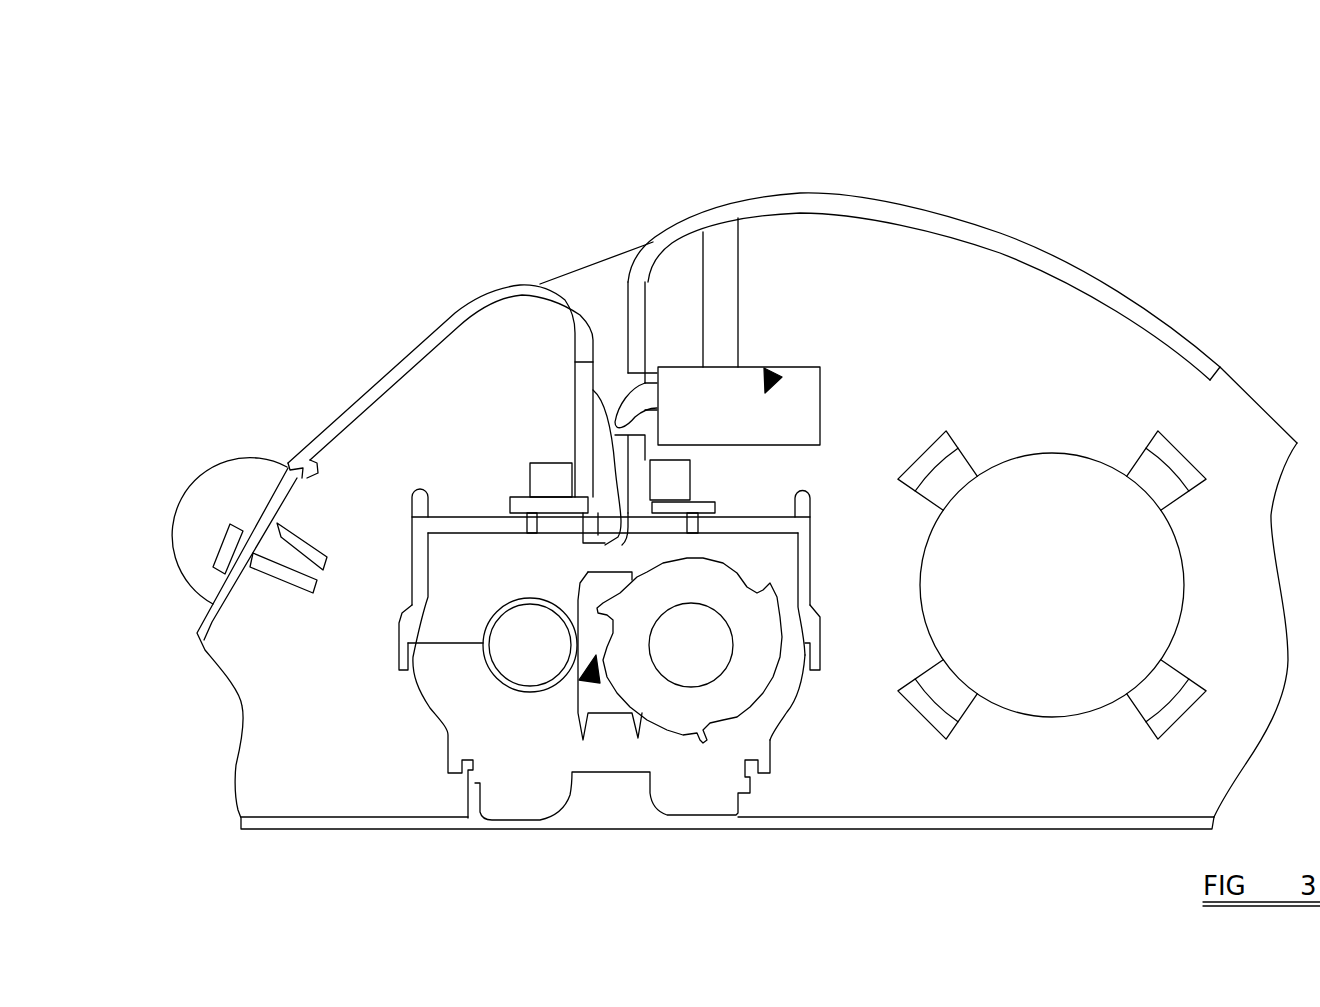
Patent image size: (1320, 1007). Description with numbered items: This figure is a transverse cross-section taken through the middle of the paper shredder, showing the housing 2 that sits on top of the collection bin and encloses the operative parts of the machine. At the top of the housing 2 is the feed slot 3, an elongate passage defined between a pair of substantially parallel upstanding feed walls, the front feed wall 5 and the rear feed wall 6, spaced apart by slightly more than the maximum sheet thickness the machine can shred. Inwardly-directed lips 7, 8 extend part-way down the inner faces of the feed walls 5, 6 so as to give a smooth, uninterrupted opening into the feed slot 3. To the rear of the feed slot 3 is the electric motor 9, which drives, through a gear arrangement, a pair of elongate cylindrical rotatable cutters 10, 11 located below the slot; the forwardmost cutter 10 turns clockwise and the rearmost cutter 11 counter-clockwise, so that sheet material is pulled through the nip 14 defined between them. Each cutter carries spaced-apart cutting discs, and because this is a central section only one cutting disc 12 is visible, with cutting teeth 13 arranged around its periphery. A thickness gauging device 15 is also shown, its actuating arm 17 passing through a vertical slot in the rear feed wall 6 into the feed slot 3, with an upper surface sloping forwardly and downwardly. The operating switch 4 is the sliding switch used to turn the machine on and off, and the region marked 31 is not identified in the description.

The housing 2 is at (993, 230).
The feed slot 3 is at (590, 283).
The operating switch 4 is at (252, 473).
The front feed wall 5 is at (592, 475).
The rear feed wall 6 is at (637, 450).
The inwardly-directed lip 7 is at (612, 353).
The inwardly-directed lip 8 is at (630, 290).
The electric motor 9 is at (1052, 580).
The forwardmost cutter 10 is at (527, 657).
The rearmost cutter 11 is at (680, 667).
The cutting disc 12 is at (718, 693).
The cutting teeth 13 is at (698, 732).
The nip 14 is at (585, 683).
The thickness gauging device 15 is at (770, 385).
The actuating arm 17 is at (653, 362).
The interior space 31 is at (960, 333).